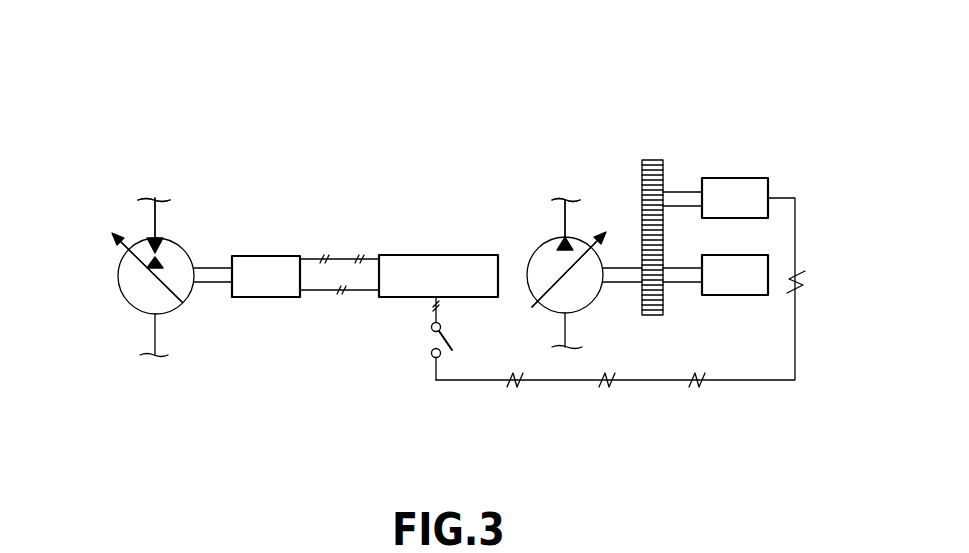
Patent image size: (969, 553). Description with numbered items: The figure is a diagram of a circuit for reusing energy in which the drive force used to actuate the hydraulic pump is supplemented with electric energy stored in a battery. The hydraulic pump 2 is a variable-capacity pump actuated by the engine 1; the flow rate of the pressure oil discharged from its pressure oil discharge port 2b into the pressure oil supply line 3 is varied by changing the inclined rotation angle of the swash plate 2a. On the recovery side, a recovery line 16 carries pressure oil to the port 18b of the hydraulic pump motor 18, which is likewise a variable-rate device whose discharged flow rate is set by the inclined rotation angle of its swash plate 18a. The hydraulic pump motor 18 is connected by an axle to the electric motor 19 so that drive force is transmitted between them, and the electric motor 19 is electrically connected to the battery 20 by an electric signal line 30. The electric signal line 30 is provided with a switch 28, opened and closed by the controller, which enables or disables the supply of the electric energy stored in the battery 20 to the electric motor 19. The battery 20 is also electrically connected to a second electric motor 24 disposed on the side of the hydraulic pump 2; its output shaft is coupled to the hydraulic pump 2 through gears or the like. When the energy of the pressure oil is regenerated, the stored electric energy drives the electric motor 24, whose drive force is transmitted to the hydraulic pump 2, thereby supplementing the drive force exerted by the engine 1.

The engine 1 is at (710, 297).
The hydraulic pump 2 is at (532, 250).
The swash plate 2a is at (547, 285).
The pressure oil discharge port 2b is at (577, 232).
The pressure oil supply line 3 is at (563, 218).
The recovery line 16 is at (157, 218).
The hydraulic pump motor 18 is at (173, 308).
The swash plate 18a is at (142, 265).
The port 18b is at (154, 240).
The electric motor 19 is at (253, 300).
The battery 20 is at (397, 255).
The electric motor 24 is at (715, 178).
The switch 28 is at (426, 345).
The electric signal line 30 is at (310, 258).